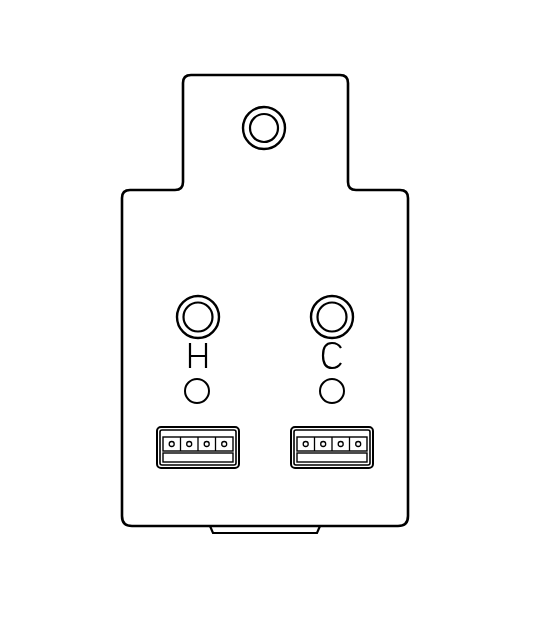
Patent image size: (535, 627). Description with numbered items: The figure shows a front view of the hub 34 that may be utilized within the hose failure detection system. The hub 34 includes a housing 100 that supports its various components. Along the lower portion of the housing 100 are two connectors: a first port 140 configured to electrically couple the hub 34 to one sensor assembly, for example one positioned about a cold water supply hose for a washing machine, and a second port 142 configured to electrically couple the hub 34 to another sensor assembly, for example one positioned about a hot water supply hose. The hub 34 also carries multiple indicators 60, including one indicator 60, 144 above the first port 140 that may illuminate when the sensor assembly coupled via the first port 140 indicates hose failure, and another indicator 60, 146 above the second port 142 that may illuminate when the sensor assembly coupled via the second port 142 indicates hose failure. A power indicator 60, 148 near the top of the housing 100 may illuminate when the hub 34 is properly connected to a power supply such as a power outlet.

The hub 34 is at (432, 38).
The housing 100 is at (265, 75).
The indicator 60 is at (265, 194).
The power indicator 148 is at (265, 107).
The indicator 146 is at (197, 296).
The indicator 144 is at (333, 296).
The second port 142 is at (195, 427).
The first port 140 is at (335, 427).